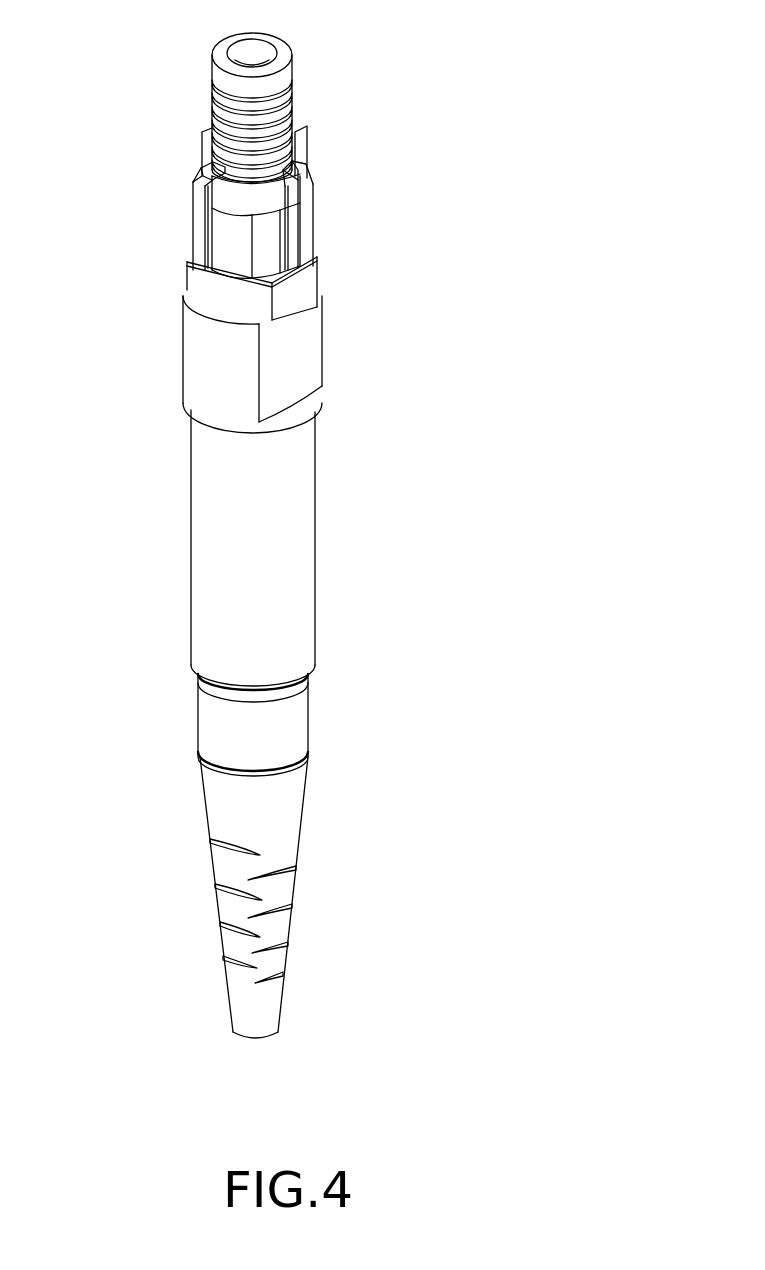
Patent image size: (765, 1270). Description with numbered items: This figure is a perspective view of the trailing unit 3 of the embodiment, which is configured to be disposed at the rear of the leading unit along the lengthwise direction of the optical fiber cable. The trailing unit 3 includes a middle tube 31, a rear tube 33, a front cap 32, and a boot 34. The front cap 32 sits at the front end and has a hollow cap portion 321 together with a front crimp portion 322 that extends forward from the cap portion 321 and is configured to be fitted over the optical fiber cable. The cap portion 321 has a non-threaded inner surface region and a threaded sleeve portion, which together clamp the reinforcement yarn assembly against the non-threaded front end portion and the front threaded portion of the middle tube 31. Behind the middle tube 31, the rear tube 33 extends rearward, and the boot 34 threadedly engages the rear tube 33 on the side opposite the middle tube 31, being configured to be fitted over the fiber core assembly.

The trailing unit 3 is at (387, 397).
The middle tube 31 is at (200, 348).
The front cap 32 is at (342, 172).
The cap portion 321 is at (193, 205).
The front crimp portion 322 is at (215, 74).
The rear tube 33 is at (300, 593).
The boot 34 is at (297, 800).